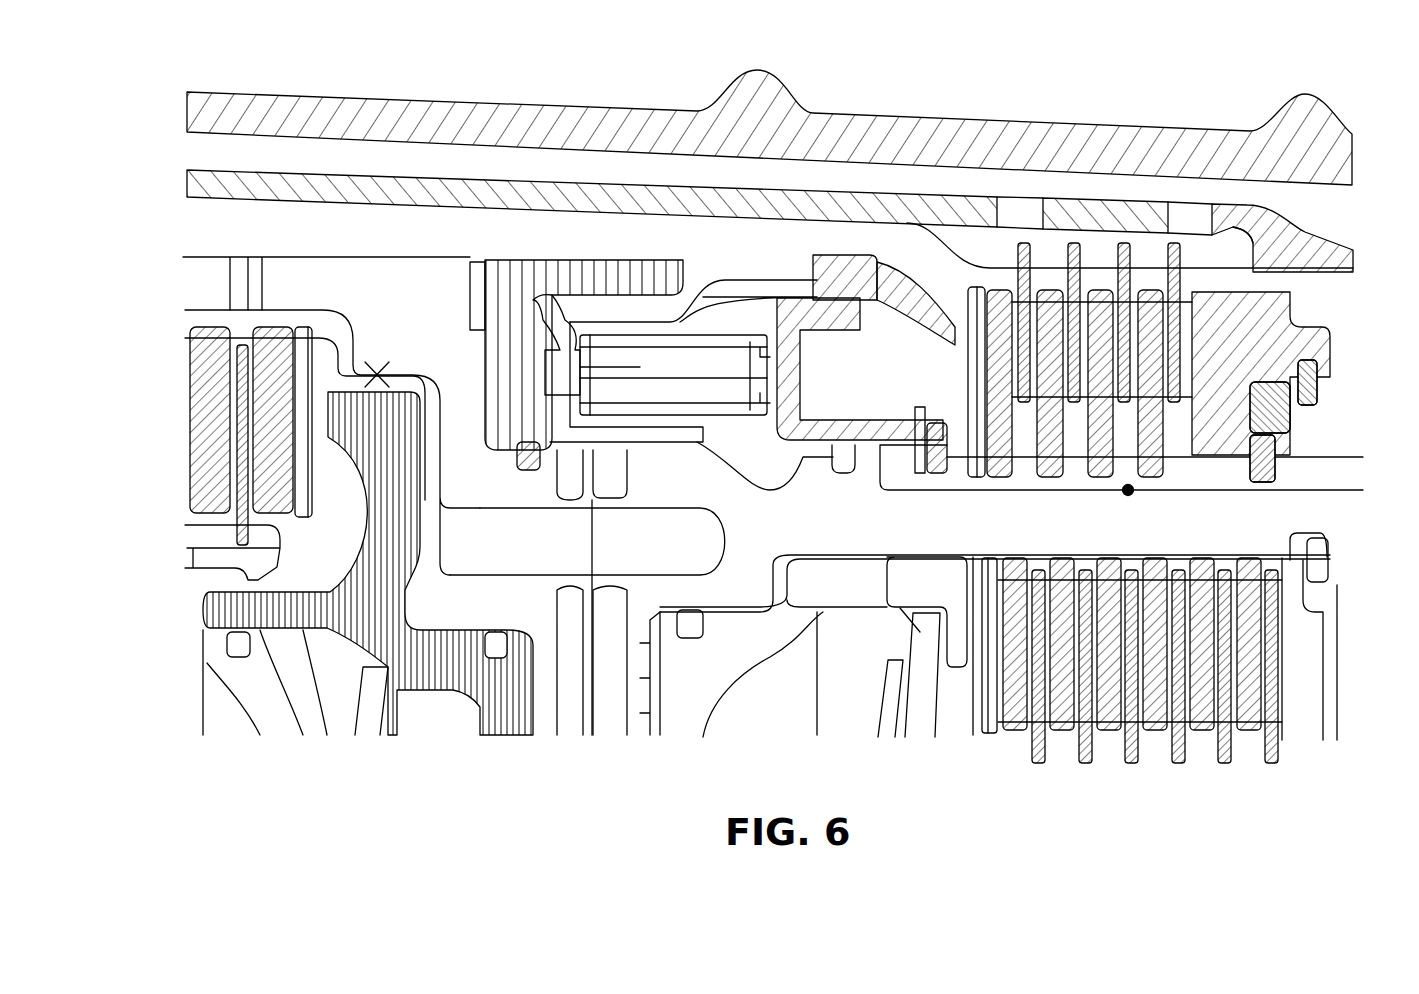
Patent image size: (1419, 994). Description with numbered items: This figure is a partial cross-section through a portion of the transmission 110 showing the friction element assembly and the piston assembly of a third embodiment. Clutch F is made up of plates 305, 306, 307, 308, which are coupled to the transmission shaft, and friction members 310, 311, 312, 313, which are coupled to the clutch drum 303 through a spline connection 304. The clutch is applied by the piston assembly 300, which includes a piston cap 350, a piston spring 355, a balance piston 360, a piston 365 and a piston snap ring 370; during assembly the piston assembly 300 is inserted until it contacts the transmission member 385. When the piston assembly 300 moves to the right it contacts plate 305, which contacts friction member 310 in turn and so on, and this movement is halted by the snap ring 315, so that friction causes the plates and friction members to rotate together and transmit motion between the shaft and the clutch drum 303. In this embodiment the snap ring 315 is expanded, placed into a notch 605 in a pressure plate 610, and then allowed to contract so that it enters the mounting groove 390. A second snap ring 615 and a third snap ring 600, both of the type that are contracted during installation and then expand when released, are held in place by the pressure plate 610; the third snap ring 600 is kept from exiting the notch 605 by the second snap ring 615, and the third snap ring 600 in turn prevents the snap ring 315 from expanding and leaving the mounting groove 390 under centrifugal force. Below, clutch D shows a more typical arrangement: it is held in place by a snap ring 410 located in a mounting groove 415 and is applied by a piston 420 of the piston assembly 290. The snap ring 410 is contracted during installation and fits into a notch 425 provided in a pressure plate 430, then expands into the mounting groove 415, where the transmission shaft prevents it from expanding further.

The transmission 110 is at (1210, 92).
The piston assembly 290 is at (791, 693).
The piston assembly 300 is at (758, 262).
The clutch drum 303 is at (1307, 242).
The spline connection 304 is at (1300, 243).
The plate 305 is at (1005, 440).
The plate 306 is at (1055, 450).
The plate 307 is at (1105, 450).
The plate 308 is at (1155, 450).
The friction member 310 is at (1024, 243).
The friction member 311 is at (1074, 243).
The friction member 312 is at (1124, 243).
The friction member 313 is at (1175, 243).
The snap ring 315 is at (1255, 468).
The piston cap 350 is at (507, 285).
The piston spring 355 is at (656, 367).
The balance piston 360 is at (837, 310).
The piston 365 is at (885, 275).
The piston snap ring 370 is at (940, 478).
The transmission member 385 is at (400, 283).
The mounting groove 390 is at (1282, 462).
The snap ring 410 is at (1315, 567).
The mounting groove 415 is at (1300, 548).
The piston 420 is at (975, 652).
The notch 425 is at (1337, 587).
The pressure plate 430 is at (1283, 713).
The third snap ring 600 is at (1292, 410).
The notch 605 is at (1245, 395).
The pressure plate 610 is at (1270, 310).
The second snap ring 615 is at (1312, 388).